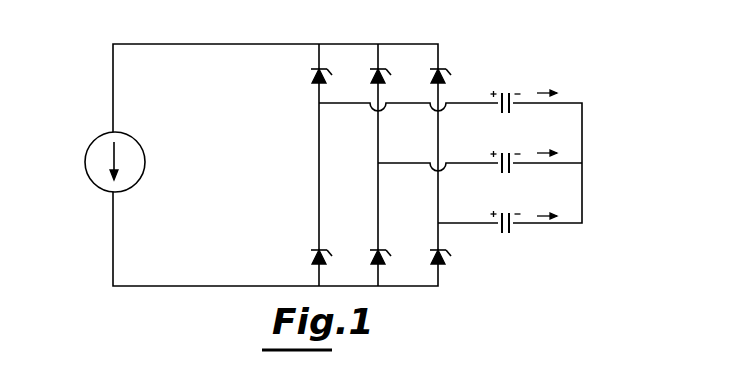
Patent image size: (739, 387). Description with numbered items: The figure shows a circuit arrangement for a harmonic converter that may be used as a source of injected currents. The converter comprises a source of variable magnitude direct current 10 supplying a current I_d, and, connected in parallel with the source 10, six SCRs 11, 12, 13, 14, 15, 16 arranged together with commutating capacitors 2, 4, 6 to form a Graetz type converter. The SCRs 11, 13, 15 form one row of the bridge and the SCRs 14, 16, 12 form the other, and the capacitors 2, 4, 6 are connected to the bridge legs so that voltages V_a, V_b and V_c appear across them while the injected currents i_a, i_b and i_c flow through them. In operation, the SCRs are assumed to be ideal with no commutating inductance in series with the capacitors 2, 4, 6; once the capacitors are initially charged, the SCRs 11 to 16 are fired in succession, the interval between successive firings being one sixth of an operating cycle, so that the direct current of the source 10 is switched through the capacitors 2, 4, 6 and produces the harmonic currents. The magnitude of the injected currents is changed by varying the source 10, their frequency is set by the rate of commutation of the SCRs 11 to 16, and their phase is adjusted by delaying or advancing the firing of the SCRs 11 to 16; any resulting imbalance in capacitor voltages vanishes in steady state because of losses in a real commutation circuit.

The source of variable magnitude direct current 10 is at (85, 158).
The SCR 11 is at (316, 67).
The SCR 13 is at (373, 67).
The SCR 15 is at (433, 67).
The SCR 14 is at (310, 258).
The SCR 16 is at (369, 258).
The SCR 12 is at (428, 258).
The commutating capacitor 2 is at (510, 107).
The commutating capacitor 4 is at (510, 166).
The commutating capacitor 6 is at (510, 227).